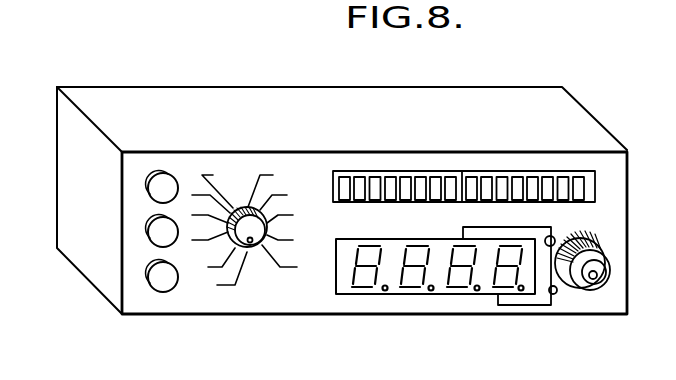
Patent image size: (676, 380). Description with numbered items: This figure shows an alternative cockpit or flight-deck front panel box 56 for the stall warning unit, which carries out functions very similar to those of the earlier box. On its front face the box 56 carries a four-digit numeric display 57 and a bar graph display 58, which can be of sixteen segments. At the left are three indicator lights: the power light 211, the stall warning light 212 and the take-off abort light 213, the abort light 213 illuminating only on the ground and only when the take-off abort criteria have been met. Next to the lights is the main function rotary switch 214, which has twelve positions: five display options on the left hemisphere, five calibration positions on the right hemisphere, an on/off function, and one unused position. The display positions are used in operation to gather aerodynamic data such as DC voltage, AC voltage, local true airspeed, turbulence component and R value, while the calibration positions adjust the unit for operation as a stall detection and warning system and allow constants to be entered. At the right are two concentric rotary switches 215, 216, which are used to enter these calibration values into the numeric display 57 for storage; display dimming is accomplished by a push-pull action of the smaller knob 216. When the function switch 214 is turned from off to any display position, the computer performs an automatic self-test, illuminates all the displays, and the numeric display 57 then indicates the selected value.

The front panel box 56 is at (543, 100).
The bar graph display 58 is at (413, 176).
The four-digit display 57 is at (378, 291).
The power light 211 is at (164, 283).
The stall warning light 212 is at (163, 182).
The take-off abort light 213 is at (155, 232).
The main function rotary switch 214 is at (252, 243).
The concentric rotary switch 215 is at (553, 268).
The concentric rotary switch 216 is at (595, 281).